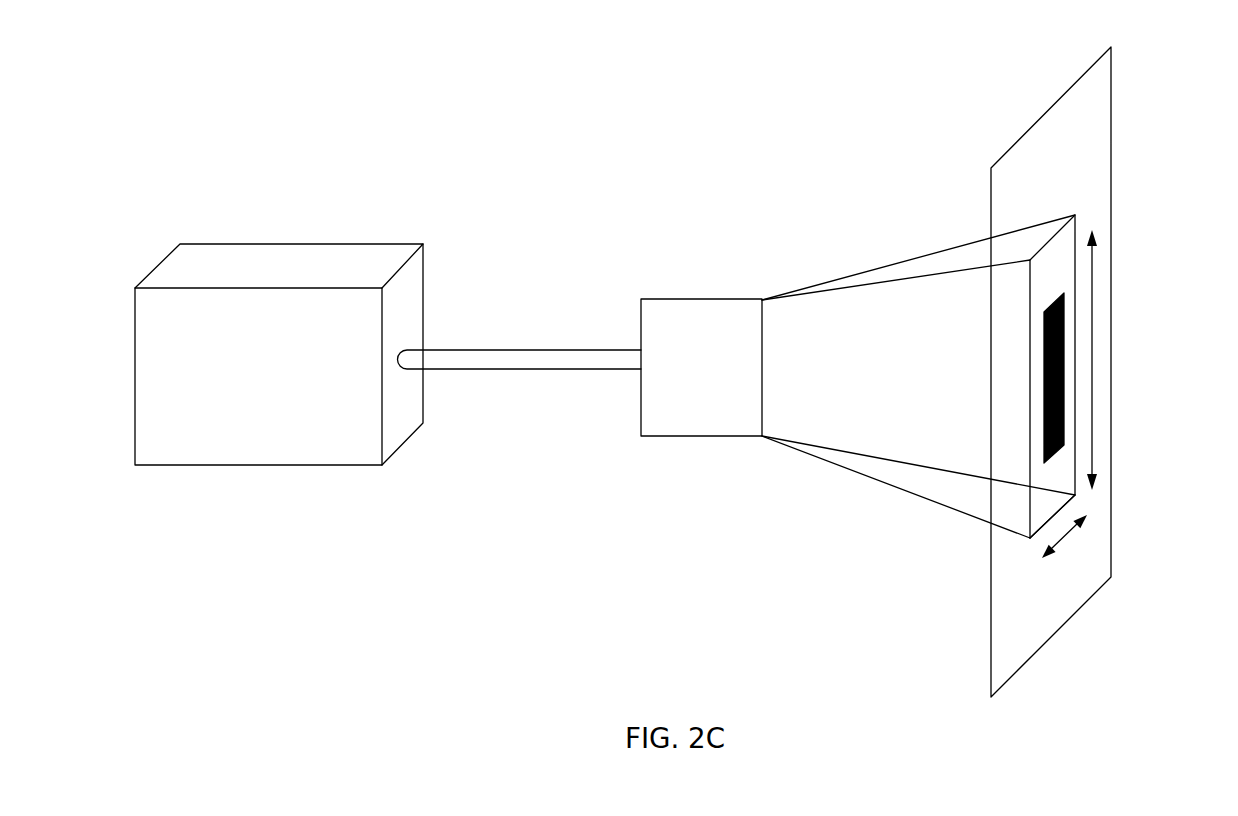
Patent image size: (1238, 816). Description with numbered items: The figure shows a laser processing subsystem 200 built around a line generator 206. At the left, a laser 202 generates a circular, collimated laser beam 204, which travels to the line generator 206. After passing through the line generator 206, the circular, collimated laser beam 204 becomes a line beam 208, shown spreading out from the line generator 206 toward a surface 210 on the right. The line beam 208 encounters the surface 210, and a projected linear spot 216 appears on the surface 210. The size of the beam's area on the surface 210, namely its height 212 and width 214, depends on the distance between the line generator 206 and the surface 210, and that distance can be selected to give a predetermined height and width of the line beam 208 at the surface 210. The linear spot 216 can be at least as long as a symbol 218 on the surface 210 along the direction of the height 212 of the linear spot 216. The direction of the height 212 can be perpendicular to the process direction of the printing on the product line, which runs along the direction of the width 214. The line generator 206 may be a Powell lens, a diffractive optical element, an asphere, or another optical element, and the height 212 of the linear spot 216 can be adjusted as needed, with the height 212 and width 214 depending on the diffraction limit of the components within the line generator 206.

The laser processing subsystem 200 is at (149, 92).
The laser 202 is at (270, 243).
The circular, collimated laser beam 204 is at (476, 350).
The line generator 206 is at (681, 299).
The line beam 208 is at (847, 280).
The surface 210 is at (997, 162).
The height 212 is at (1092, 340).
The width 214 is at (1073, 527).
The projected linear spot 216 is at (1073, 491).
The symbol 218 is at (1044, 463).